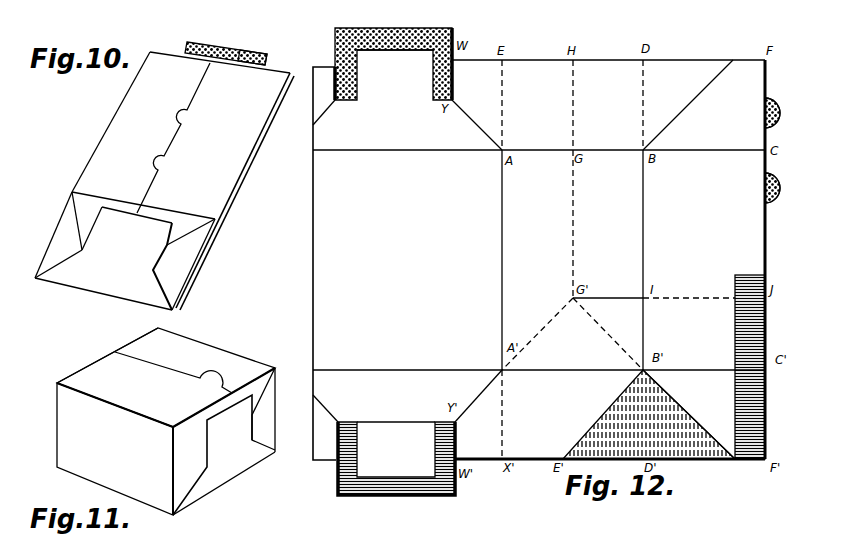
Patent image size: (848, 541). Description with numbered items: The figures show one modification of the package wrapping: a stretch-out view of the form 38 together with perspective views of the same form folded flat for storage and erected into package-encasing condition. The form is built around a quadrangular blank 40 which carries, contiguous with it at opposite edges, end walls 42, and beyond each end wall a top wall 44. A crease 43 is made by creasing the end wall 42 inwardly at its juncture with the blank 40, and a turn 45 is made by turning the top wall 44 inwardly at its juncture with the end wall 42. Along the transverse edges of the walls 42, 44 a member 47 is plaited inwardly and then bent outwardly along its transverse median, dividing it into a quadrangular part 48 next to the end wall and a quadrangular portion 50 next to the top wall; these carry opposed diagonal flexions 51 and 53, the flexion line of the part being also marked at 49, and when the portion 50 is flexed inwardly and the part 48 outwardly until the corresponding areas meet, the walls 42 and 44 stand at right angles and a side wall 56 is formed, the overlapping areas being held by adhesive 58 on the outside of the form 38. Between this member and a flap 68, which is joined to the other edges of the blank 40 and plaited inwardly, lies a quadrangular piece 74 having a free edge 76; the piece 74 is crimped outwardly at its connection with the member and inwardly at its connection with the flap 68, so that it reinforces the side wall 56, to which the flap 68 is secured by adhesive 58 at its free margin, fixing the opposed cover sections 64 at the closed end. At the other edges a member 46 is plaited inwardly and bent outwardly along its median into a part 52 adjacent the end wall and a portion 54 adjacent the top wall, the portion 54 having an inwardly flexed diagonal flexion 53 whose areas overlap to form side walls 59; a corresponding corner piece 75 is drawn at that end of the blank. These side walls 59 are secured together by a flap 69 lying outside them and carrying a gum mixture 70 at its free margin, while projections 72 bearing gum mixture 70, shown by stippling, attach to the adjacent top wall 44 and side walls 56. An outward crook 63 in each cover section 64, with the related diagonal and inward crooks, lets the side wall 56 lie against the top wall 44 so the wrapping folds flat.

In FIG. 12, the form 38 is at (539, 283).
In FIG. 12, the quadrangular blank 40 is at (385, 253).
In FIG. 11, the end wall 42 is at (115, 449).
In FIG. 12, the end wall 42 is at (535, 253).
In FIG. 11, the crease 43 is at (138, 418).
In FIG. 12, the crease 43 is at (505, 305).
In FIG. 11, the top wall 44 is at (166, 377).
In FIG. 12, the top wall 44 is at (693, 243).
In FIG. 12, the turn 45 is at (645, 332).
In FIG. 12, the member 46 is at (665, 32).
In FIG. 12, the member 47 is at (539, 386).
In FIG. 12, the quadrangular part 48 is at (535, 388).
In FIG. 12, the diagonal fold line 49 is at (645, 395).
In FIG. 12, the quadrangular portion 50 is at (716, 380).
In FIG. 12, the diagonal flexion 51 is at (598, 416).
In FIG. 12, the part 52 is at (600, 127).
In FIG. 12, the diagonal flexion 53 is at (697, 100).
In FIG. 12, the portion 54 is at (731, 127).
In FIG. 10, the side wall 56 is at (187, 248).
In FIG. 11, the side wall 56 is at (100, 360).
In FIG. 12, the adhesive 58 is at (408, 487).
In FIG. 11, the side wall 59 is at (268, 388).
In FIG. 12, the outward crook 63 is at (573, 212).
In FIG. 12, the cover section 64 is at (783, 243).
In FIG. 10, the flap 68 is at (127, 258).
In FIG. 12, the flap 68 is at (396, 425).
In FIG. 10, the flap 69 is at (233, 50).
In FIG. 11, the flap 69 is at (212, 455).
In FIG. 12, the flap 69 is at (370, 60).
In FIG. 10, the gum mixture 70 is at (265, 56).
In FIG. 12, the gum mixture 70 is at (345, 42).
In FIG. 10, the projection 72 is at (187, 114).
In FIG. 12, the projection 72 is at (782, 125).
In FIG. 12, the quadrangular piece 74 is at (399, 419).
In FIG. 12, the corner panel 75 is at (477, 115).
In FIG. 12, the free edge 76 is at (460, 425).